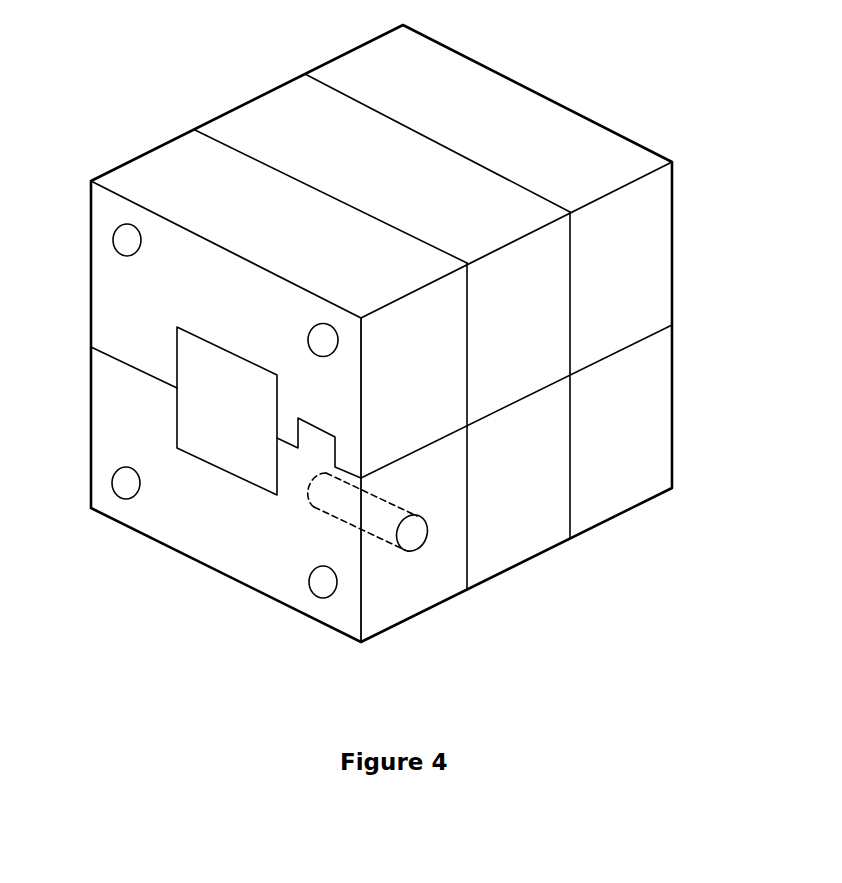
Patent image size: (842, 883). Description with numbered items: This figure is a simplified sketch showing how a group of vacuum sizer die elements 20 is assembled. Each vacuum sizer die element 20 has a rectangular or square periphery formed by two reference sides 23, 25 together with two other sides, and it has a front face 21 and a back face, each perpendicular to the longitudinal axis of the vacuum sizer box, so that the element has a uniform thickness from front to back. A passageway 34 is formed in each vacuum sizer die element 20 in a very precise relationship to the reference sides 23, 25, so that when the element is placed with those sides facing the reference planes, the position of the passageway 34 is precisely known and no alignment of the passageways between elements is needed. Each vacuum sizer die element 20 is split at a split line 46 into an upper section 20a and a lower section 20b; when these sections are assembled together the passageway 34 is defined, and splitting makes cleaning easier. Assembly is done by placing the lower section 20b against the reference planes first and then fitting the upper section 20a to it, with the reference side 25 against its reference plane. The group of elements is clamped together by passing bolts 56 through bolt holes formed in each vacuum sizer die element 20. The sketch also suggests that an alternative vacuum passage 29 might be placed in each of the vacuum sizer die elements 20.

The vacuum sizer die element 20 is at (170, 163).
The upper section 20a is at (648, 252).
The lower section 20b is at (648, 427).
The front face 21 is at (192, 296).
The reference side 23 is at (291, 618).
The reference side 25 is at (84, 438).
The alternative vacuum passage 29 is at (383, 527).
The passageway 34 is at (218, 443).
The split line 46 is at (493, 410).
The bolts 56 is at (118, 235).